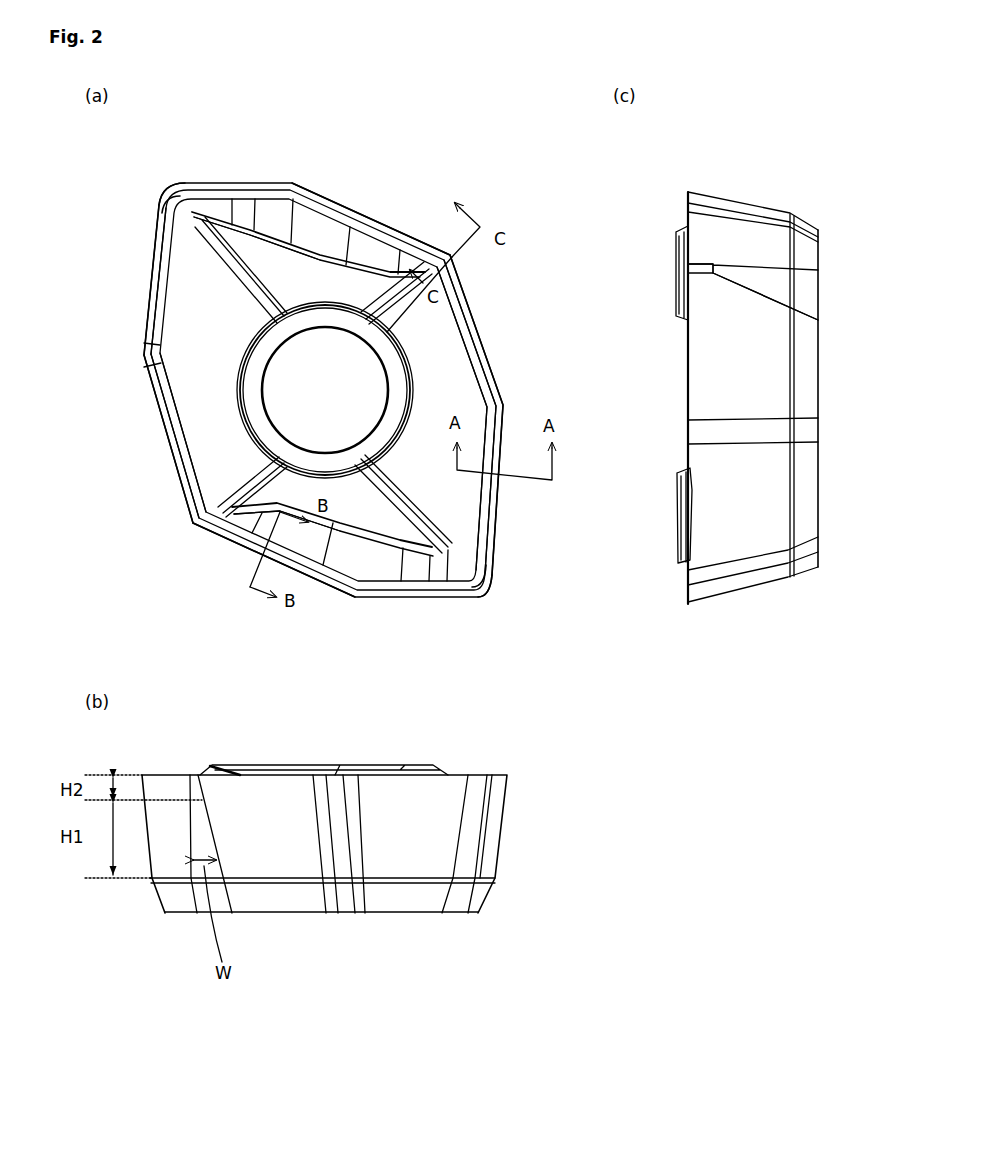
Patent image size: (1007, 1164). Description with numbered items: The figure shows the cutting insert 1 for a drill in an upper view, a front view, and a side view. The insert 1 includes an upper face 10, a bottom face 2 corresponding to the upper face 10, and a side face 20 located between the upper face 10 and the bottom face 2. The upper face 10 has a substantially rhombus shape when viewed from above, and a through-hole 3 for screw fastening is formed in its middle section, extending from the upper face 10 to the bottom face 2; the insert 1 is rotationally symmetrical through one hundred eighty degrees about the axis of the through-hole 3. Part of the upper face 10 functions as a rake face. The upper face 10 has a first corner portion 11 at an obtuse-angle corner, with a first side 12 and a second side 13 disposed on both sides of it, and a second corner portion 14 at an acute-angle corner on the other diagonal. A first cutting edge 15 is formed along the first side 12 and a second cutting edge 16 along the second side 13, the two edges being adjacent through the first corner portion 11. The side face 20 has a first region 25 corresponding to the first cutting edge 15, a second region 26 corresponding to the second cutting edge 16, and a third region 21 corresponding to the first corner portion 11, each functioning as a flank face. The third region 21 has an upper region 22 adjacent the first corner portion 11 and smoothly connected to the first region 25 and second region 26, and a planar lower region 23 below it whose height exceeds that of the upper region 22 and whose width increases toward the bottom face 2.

The insert 1 is at (130, 228).
The bottom face 2 is at (820, 270).
The through-hole 3 is at (290, 380).
The upper face 10 is at (205, 397).
The first corner portion 11 is at (192, 790).
The first side 12 is at (478, 317).
The second side 13 is at (363, 200).
The second corner portion 14 is at (170, 185).
The first cutting edge 15 is at (367, 416).
The second cutting edge 16 is at (309, 197).
The side face 20 is at (738, 508).
The third region 21 is at (420, 255).
The upper region 22 is at (702, 265).
The lower region 23 is at (748, 277).
The first region 25 is at (172, 955).
The second region 26 is at (780, 160).